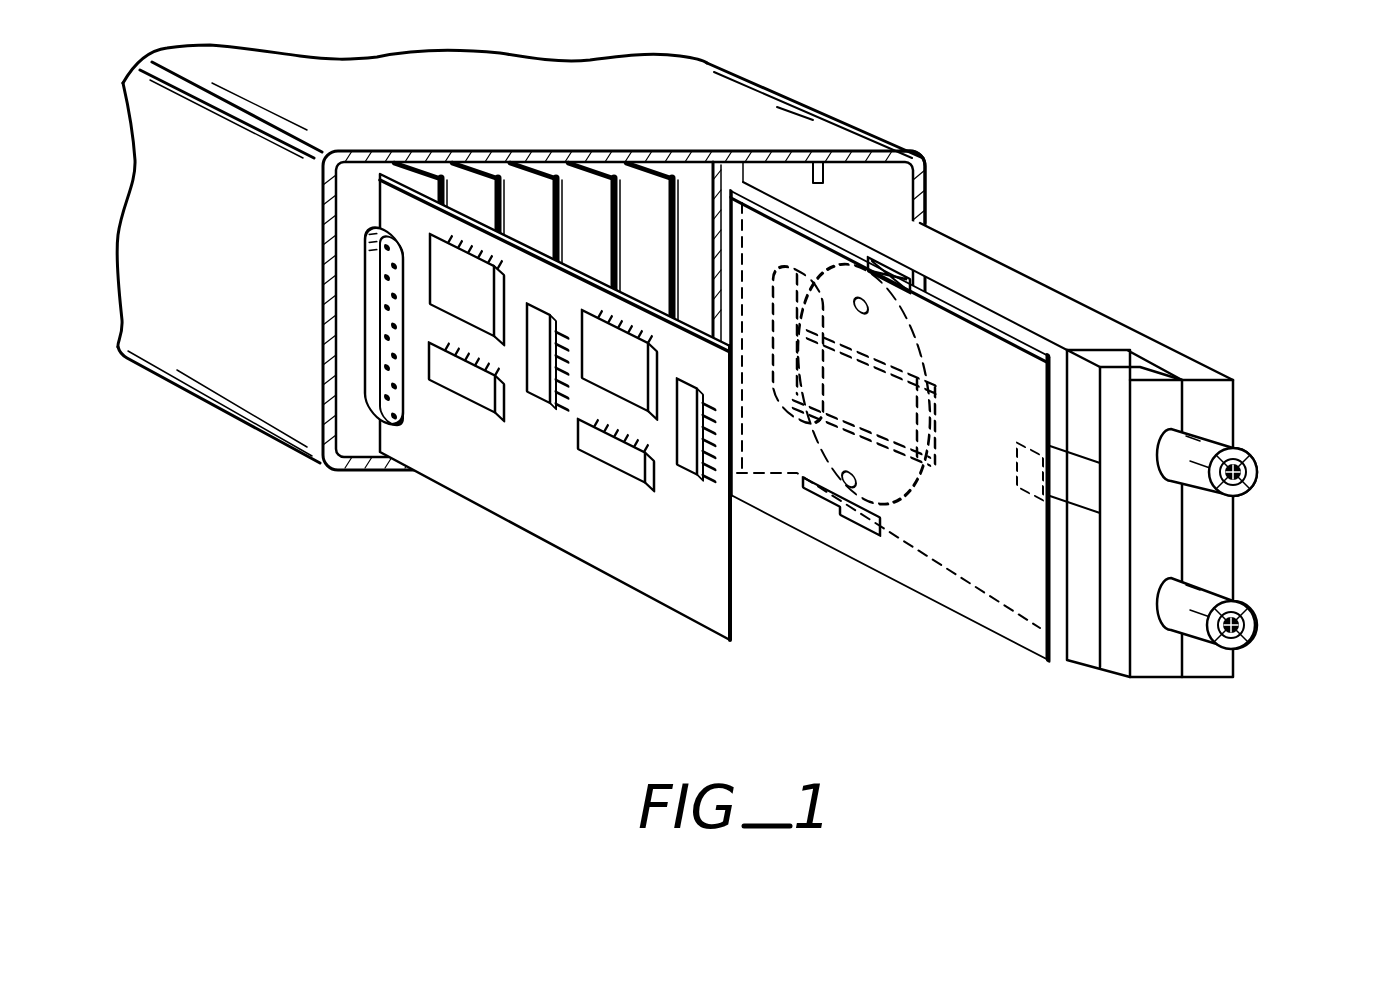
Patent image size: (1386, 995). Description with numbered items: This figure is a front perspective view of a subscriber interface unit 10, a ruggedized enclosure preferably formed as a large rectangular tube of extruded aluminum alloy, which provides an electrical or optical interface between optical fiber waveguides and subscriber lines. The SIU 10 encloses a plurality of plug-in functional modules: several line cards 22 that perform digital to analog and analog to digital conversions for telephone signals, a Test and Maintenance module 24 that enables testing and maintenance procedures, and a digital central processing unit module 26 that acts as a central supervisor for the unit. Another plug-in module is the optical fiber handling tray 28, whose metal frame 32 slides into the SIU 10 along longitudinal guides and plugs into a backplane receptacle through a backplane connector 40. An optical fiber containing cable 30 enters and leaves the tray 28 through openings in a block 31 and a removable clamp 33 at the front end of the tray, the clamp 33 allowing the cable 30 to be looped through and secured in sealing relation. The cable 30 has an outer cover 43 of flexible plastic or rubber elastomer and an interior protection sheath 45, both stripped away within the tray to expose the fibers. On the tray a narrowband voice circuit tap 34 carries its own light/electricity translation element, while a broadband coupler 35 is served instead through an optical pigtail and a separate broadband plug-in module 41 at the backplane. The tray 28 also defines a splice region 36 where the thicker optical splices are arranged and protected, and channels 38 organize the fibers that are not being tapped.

The subscriber interface unit 10 is at (250, 330).
The line cards 22 is at (675, 545).
The Test and Maintenance module 24 is at (600, 228).
The digital central processing unit module 26 is at (658, 273).
The optical fiber handling tray 28 is at (918, 607).
The optical fiber containing cable 30 is at (1260, 550).
The block 31 is at (1187, 373).
The metal frame 32 is at (1057, 324).
The clamp 33 is at (1117, 650).
The voice circuit tap 34 is at (893, 262).
The broadband coupler 35 is at (826, 520).
The splice region 36 is at (991, 495).
The channels 38 is at (900, 384).
The backplane connector 40 is at (373, 370).
The broadband plug-in module 41 is at (927, 167).
The outer cover 43 is at (1245, 457).
The interior protection sheath 45 is at (1243, 480).